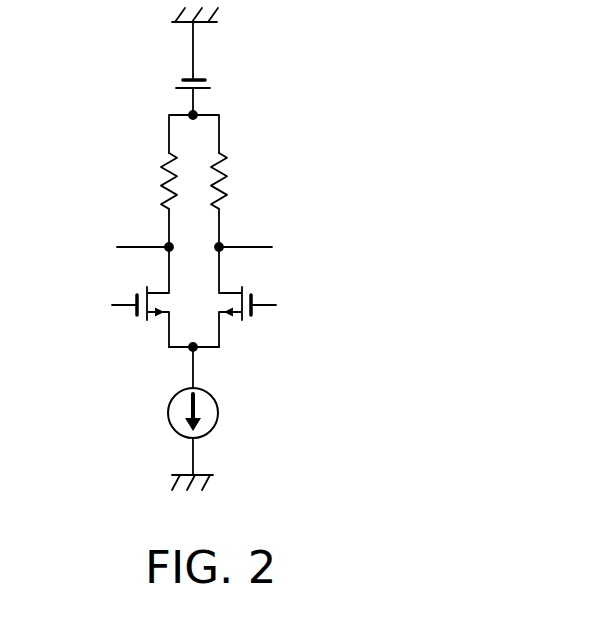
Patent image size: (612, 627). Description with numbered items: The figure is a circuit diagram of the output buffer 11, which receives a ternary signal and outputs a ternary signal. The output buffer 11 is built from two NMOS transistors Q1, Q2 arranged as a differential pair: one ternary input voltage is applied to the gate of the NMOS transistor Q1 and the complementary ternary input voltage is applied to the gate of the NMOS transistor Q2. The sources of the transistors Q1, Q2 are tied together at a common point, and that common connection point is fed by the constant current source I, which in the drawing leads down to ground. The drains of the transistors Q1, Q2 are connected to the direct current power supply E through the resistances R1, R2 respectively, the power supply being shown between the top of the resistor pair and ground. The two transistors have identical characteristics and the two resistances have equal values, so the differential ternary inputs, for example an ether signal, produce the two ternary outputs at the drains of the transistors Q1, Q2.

The output buffer 11 is at (206, 249).
The resistance R1 is at (152, 200).
The resistance R2 is at (234, 200).
The NMOS transistor Q1 is at (123, 298).
The NMOS transistor Q2 is at (263, 298).
The direct current power supply E is at (202, 88).
The constant current source I is at (202, 411).